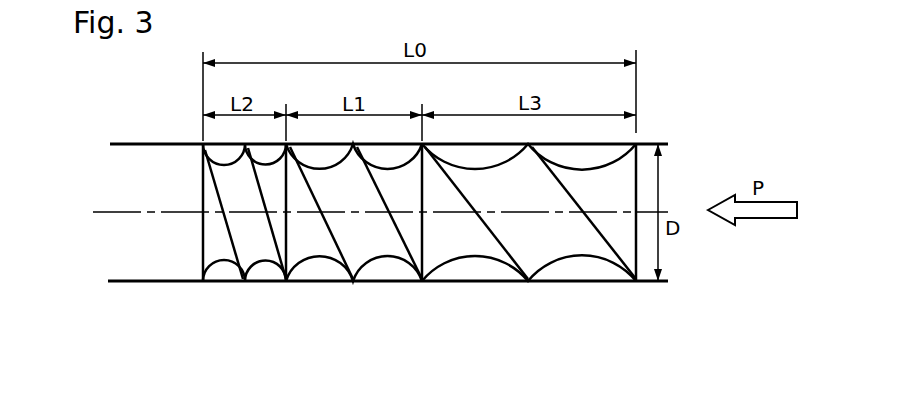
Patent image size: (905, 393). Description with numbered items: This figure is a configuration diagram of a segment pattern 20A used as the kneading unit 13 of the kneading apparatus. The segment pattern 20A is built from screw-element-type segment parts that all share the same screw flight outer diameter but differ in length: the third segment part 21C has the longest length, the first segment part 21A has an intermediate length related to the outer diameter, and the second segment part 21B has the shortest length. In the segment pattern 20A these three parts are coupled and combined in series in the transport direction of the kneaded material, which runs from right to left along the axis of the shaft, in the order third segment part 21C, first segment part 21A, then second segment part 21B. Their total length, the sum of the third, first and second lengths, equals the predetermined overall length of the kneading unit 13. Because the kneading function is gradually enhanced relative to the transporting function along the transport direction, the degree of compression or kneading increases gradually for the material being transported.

The segment pattern 20A is at (658, 128).
The kneading unit 13 is at (433, 162).
The first segment part 21A is at (334, 264).
The second segment part 21B is at (230, 264).
The third segment part 21C is at (492, 264).